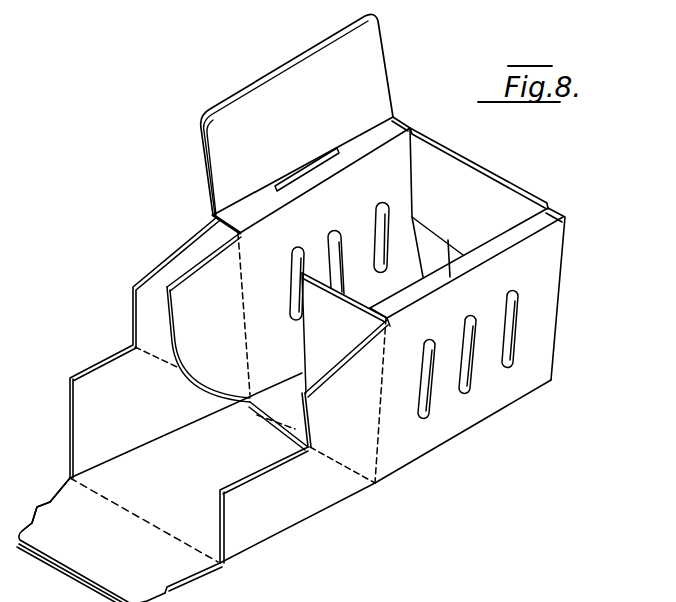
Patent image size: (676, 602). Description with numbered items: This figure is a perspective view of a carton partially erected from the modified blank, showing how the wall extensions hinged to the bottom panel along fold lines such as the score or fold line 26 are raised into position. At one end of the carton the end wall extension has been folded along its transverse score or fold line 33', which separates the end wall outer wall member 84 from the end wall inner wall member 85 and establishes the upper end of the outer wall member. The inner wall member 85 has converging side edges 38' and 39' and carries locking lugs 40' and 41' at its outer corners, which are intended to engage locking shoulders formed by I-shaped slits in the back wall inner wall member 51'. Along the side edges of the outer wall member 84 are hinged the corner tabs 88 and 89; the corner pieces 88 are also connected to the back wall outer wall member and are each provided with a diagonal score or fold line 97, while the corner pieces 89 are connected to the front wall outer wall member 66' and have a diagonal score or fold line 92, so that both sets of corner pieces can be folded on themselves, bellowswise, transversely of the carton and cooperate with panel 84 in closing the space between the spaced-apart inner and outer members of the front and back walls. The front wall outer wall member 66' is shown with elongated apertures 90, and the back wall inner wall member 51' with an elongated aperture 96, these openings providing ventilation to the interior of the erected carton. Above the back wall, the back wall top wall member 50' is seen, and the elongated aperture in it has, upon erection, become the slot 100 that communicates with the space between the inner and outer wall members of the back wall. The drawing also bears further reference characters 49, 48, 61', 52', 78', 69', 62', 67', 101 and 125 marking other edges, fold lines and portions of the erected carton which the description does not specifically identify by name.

The lid panel 49 is at (386, 58).
The lid side edge 48 is at (193, 167).
The back wall top wall member 50' is at (303, 175).
The slot 100 is at (325, 158).
The elongated aperture 96 is at (345, 237).
The fold line 61' is at (254, 314).
The back wall inner wall member 51' is at (337, 333).
The partition lower edge 52' is at (342, 357).
The partition flange 78' is at (367, 347).
The corner pieces 88 is at (100, 375).
The diagonal score or fold line 97 is at (190, 317).
The end wall outer wall member 84 is at (460, 251).
The end wall inner wall member 85 is at (484, 180).
The side edge 38' is at (70, 503).
The locking lug 40' is at (46, 527).
The transverse score or fold line 33' is at (144, 520).
The side edge 39' is at (184, 570).
The locking lug 41' is at (146, 585).
The score or fold line 26 is at (259, 416).
The vertical flange 69' is at (295, 435).
The diagonal score or fold line 92 is at (332, 458).
The corner pieces 89 is at (314, 510).
The rear wall tab 62' is at (437, 202).
The right wall edge 67' is at (540, 294).
The elongated apertures 90 is at (515, 331).
The front wall outer wall member 66' is at (469, 350).
The assembly 101 is at (650, 582).
The base 125 is at (296, 598).